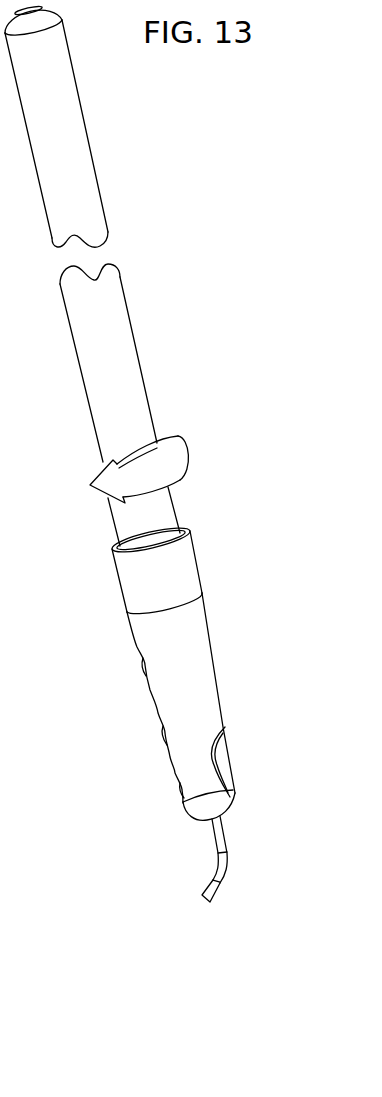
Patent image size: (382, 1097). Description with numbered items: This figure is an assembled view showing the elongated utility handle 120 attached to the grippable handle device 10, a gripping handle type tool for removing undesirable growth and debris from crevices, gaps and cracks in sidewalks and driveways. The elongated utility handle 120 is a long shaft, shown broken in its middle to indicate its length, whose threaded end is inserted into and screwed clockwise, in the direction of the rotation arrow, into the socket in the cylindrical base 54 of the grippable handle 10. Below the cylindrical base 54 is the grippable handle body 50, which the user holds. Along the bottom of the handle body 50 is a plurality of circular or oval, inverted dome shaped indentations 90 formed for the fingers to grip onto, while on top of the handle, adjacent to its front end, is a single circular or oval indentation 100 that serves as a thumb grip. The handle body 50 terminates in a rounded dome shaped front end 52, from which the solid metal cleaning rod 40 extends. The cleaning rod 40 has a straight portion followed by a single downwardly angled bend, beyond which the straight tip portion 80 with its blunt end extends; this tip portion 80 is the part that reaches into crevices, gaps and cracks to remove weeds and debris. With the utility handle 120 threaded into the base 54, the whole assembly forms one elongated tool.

The gripping handle type tool 10 is at (192, 583).
The solid metal cleaning rod 40 is at (227, 859).
The grippable handle body 50 is at (190, 712).
The rounded dome shaped front end 52 is at (213, 808).
The cylindrical base 54 is at (178, 563).
The straight tip portion 80 is at (208, 886).
The plurality of circular or oval indentations 90 is at (142, 660).
The single circular or oval indentation 100 is at (225, 768).
The elongated utility handle 120 is at (75, 203).